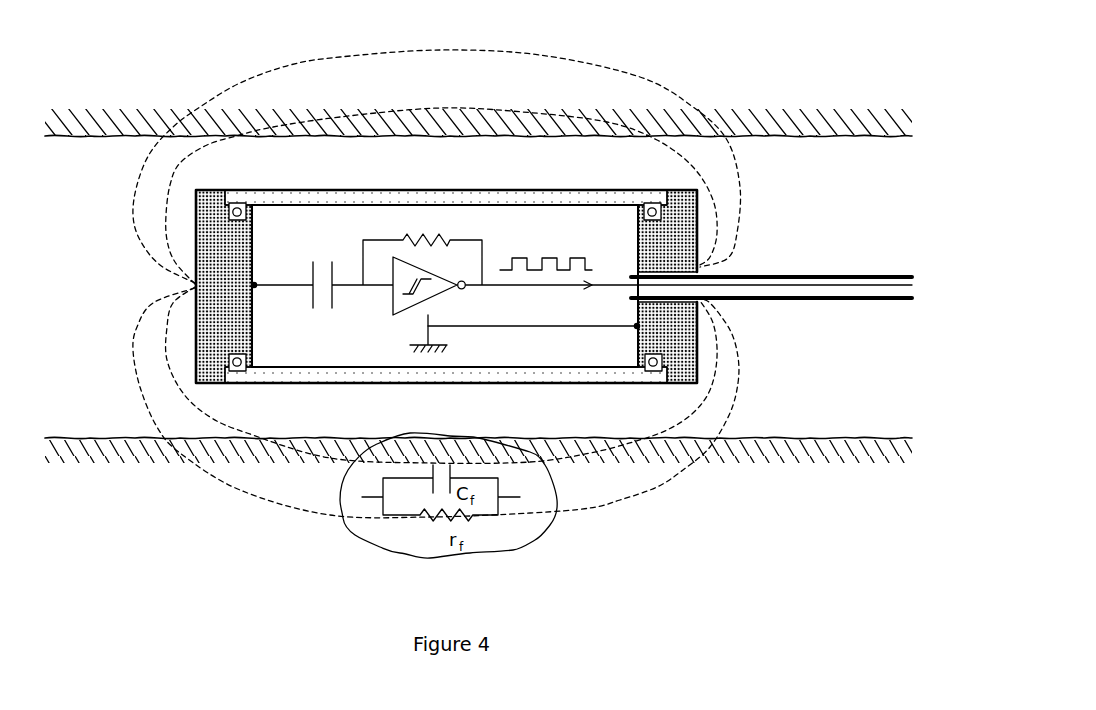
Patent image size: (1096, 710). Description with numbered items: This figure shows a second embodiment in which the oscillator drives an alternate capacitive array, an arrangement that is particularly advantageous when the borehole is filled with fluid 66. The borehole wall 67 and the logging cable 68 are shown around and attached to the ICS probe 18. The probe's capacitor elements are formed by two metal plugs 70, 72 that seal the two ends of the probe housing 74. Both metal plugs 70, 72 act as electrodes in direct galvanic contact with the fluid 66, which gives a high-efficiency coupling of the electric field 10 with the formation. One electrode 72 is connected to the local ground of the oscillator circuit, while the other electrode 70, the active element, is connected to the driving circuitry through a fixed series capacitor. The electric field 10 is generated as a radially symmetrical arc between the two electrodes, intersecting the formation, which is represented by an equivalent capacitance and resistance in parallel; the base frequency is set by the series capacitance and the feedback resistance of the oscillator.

The electric field 10 is at (665, 487).
The ICS probe 18 is at (507, 173).
The fluid 66 is at (821, 170).
The borehole wall 67 is at (793, 130).
The logging cable 68 is at (776, 268).
The metal plug 70 is at (203, 243).
The metal plug 72 is at (680, 327).
The probe housing 74 is at (525, 378).